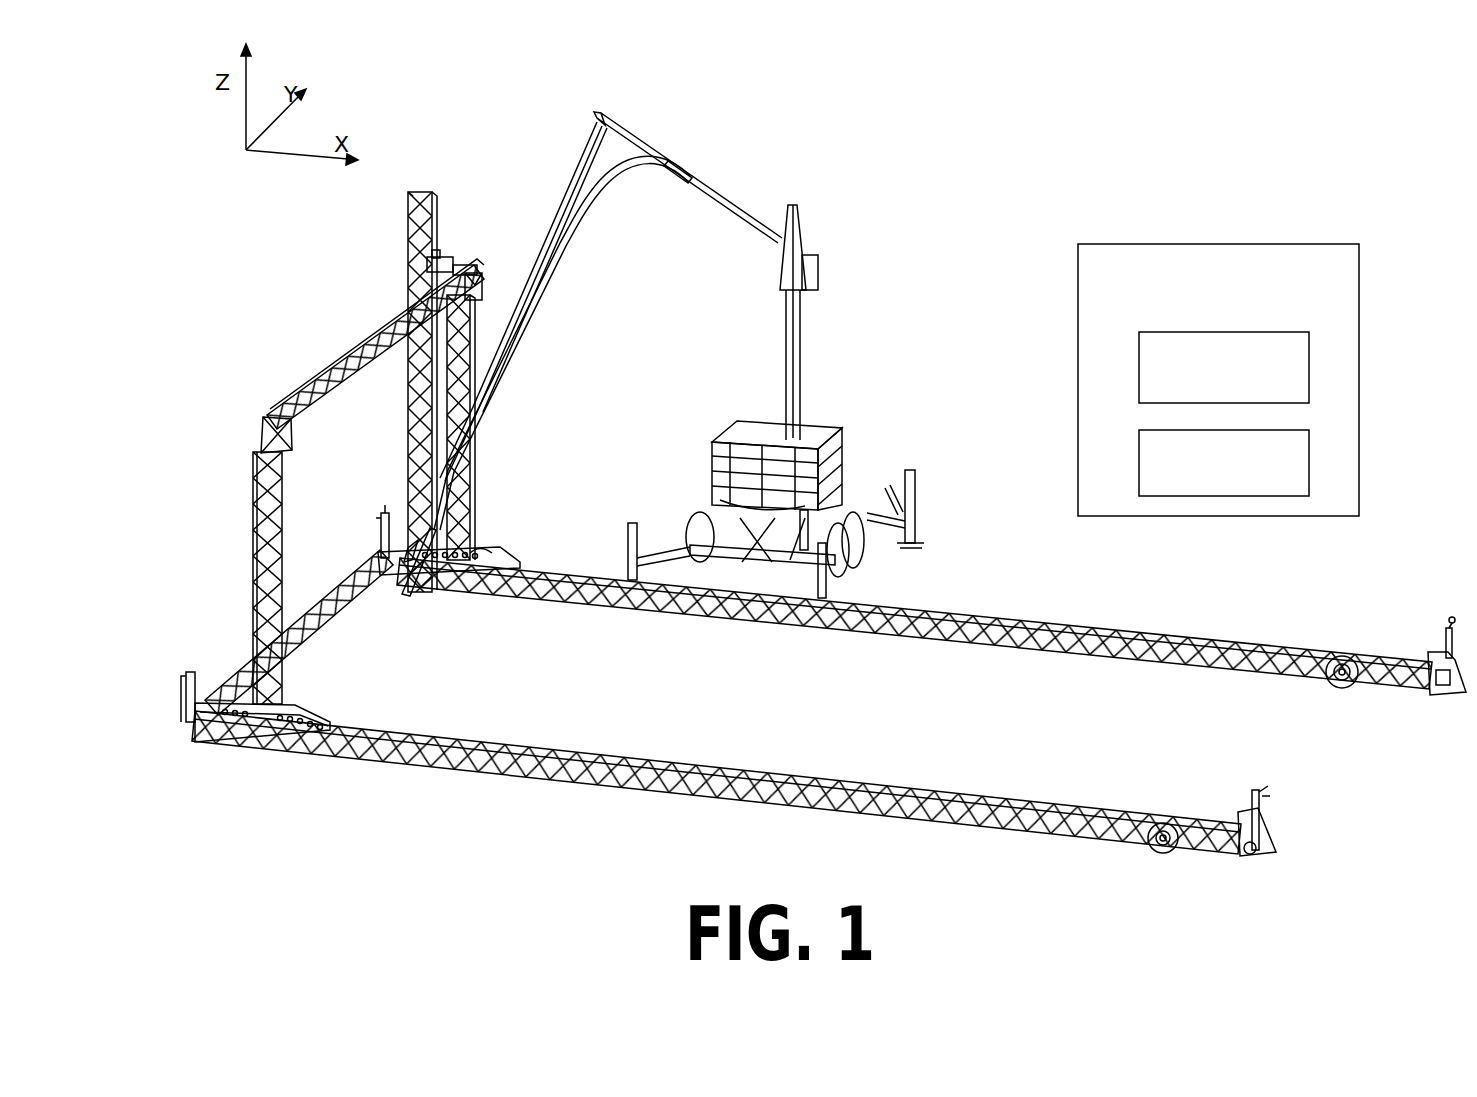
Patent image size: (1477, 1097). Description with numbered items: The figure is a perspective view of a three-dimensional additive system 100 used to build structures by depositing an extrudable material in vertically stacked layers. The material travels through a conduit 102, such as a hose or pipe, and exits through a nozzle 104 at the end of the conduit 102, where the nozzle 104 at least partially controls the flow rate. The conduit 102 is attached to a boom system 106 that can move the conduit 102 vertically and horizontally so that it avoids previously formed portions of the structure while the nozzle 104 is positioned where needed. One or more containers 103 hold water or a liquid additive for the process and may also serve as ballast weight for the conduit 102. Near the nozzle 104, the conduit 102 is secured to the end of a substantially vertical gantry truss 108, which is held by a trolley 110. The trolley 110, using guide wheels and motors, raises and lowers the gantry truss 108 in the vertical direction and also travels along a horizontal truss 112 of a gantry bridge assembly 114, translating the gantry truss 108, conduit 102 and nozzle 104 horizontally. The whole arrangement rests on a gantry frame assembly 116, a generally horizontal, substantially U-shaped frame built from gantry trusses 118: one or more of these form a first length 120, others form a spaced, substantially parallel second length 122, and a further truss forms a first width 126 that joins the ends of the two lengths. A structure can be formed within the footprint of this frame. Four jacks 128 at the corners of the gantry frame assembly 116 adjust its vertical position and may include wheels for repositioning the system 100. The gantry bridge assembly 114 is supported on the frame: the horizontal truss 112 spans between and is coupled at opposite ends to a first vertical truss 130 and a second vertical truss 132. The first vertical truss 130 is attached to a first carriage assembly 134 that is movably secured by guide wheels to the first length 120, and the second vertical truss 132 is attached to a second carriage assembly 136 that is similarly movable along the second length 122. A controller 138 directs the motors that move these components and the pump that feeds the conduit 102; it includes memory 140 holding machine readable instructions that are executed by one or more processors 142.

The 3D additive system 100 is at (1288, 180).
The conduit 102 is at (610, 186).
The containers 103 is at (745, 425).
The nozzle 104 is at (412, 593).
The boom system 106 is at (630, 128).
The gantry truss 108 is at (440, 187).
The trolley 110 is at (452, 259).
The horizontal truss 112 is at (355, 350).
The gantry bridge assembly 114 is at (236, 432).
The gantry frame assembly 116 is at (624, 804).
The gantry trusses 118 is at (585, 763).
The first length 120 is at (1145, 635).
The second length 122 is at (1005, 805).
The first width 126 is at (330, 640).
The jacks 128 is at (382, 518).
The first vertical truss 130 is at (474, 468).
The second vertical truss 132 is at (258, 582).
The first carriage assembly 134 is at (478, 548).
The second carriage assembly 136 is at (245, 742).
The controller 138 is at (1218, 380).
The memory 140 is at (1224, 367).
The processors 142 is at (1224, 463).